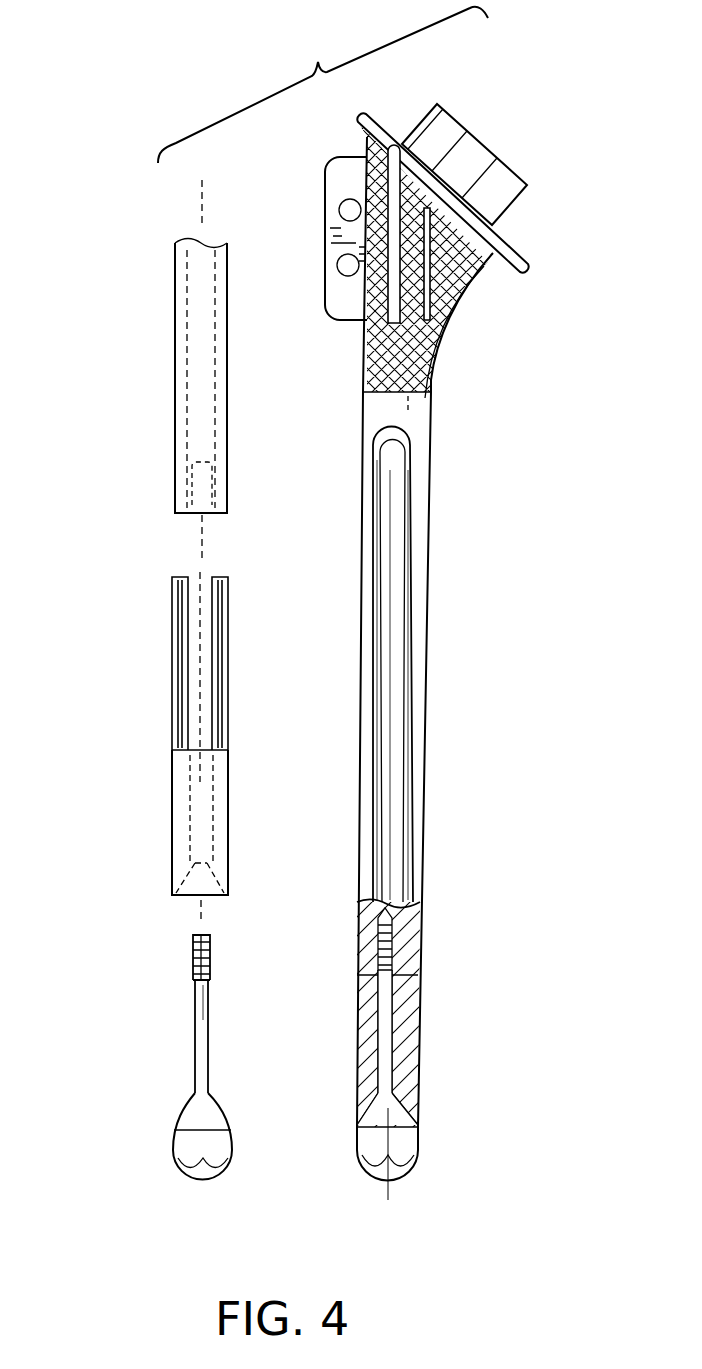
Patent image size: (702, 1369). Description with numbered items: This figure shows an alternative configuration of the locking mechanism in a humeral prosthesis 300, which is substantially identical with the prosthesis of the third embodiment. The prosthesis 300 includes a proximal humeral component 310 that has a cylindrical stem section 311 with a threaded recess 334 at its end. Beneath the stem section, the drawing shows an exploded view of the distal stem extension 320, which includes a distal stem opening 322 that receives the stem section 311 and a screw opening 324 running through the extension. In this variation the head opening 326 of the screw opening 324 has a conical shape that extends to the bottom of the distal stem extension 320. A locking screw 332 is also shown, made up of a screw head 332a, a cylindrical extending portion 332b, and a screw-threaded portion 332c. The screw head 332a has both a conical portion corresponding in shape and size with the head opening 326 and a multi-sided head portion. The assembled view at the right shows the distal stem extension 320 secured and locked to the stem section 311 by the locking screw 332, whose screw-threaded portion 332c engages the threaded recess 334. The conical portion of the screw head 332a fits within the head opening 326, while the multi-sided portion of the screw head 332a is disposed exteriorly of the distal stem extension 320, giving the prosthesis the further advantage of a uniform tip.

The prosthesis 300 is at (462, 661).
The proximal humeral component 310 is at (425, 523).
The cylindrical stem section 311 is at (175, 420).
The distal stem extension 320 is at (351, 853).
The distal stem opening 322 is at (192, 646).
The screw opening 324 is at (185, 835).
The head opening 326 is at (180, 885).
The locking screw 332 is at (276, 1054).
The screw head 332a is at (180, 1148).
The cylindrical extending portion 332b is at (195, 1067).
The screw-threaded portion 332c is at (193, 955).
The threaded recess 334 is at (190, 518).